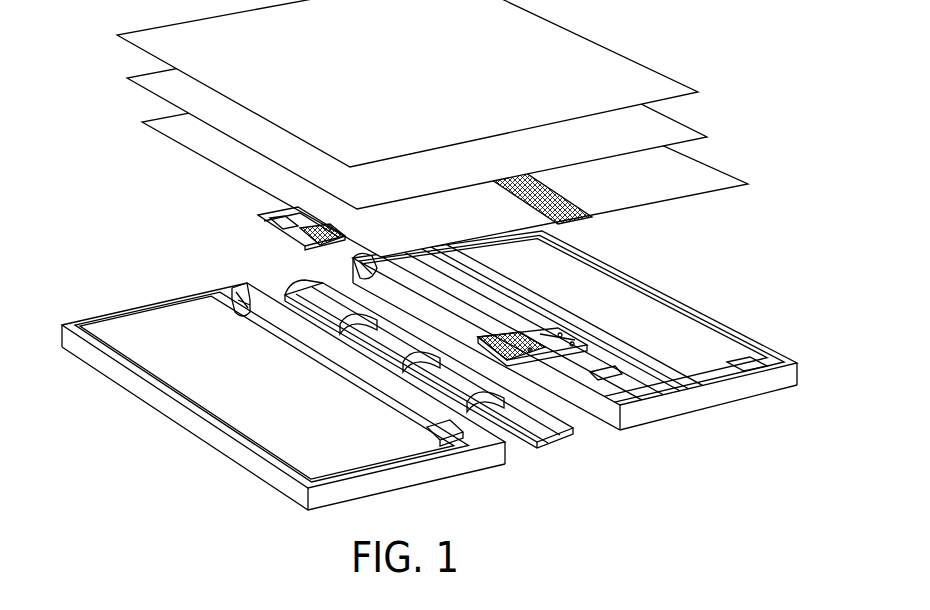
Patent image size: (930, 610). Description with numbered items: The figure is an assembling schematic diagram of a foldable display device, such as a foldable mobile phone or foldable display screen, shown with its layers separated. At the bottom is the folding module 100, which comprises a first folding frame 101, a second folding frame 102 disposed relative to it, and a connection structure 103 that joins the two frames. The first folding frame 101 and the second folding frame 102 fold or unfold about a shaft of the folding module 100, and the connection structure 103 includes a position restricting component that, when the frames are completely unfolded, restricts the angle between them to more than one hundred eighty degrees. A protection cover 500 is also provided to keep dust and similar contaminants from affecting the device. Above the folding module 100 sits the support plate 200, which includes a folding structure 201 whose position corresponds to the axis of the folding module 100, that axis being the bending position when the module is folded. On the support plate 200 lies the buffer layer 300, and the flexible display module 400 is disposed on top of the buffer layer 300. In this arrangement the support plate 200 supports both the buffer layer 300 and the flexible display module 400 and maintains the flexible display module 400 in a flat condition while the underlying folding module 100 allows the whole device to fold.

The folding module 100 is at (80, 284).
The first folding frame 101 is at (184, 413).
The second folding frame 102 is at (768, 380).
The connection structure 103 is at (277, 218).
The support plate 200 is at (738, 186).
The folding structure 201 is at (593, 217).
The buffer layer 300 is at (677, 131).
The flexible display module 400 is at (668, 80).
The protection cover 500 is at (575, 440).